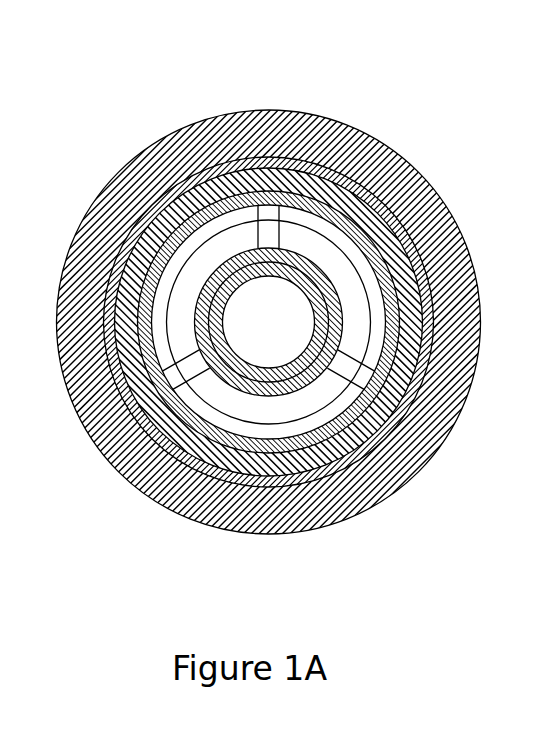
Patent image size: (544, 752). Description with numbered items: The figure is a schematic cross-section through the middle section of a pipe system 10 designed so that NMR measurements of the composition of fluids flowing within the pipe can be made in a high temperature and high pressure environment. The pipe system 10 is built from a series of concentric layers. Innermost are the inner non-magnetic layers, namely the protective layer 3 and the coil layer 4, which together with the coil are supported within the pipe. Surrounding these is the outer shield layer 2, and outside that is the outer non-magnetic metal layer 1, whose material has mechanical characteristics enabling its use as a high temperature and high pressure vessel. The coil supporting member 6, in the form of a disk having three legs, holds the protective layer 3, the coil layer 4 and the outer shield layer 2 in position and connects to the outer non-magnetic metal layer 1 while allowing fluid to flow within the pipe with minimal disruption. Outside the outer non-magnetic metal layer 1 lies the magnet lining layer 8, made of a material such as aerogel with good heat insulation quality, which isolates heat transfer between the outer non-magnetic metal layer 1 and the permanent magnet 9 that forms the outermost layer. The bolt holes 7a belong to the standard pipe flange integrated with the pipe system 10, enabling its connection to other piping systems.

The outer non-magnetic metal layer 1 is at (397, 253).
The outer shield layer 2 is at (390, 290).
The protective layer 3 is at (343, 310).
The coil layer 4 is at (322, 338).
The coil supporting member 6 is at (313, 423).
The bolt holes 7a is at (397, 197).
The magnet lining layer 8 is at (313, 167).
The permanent magnet 9 is at (252, 122).
The pipe system 10 is at (460, 95).